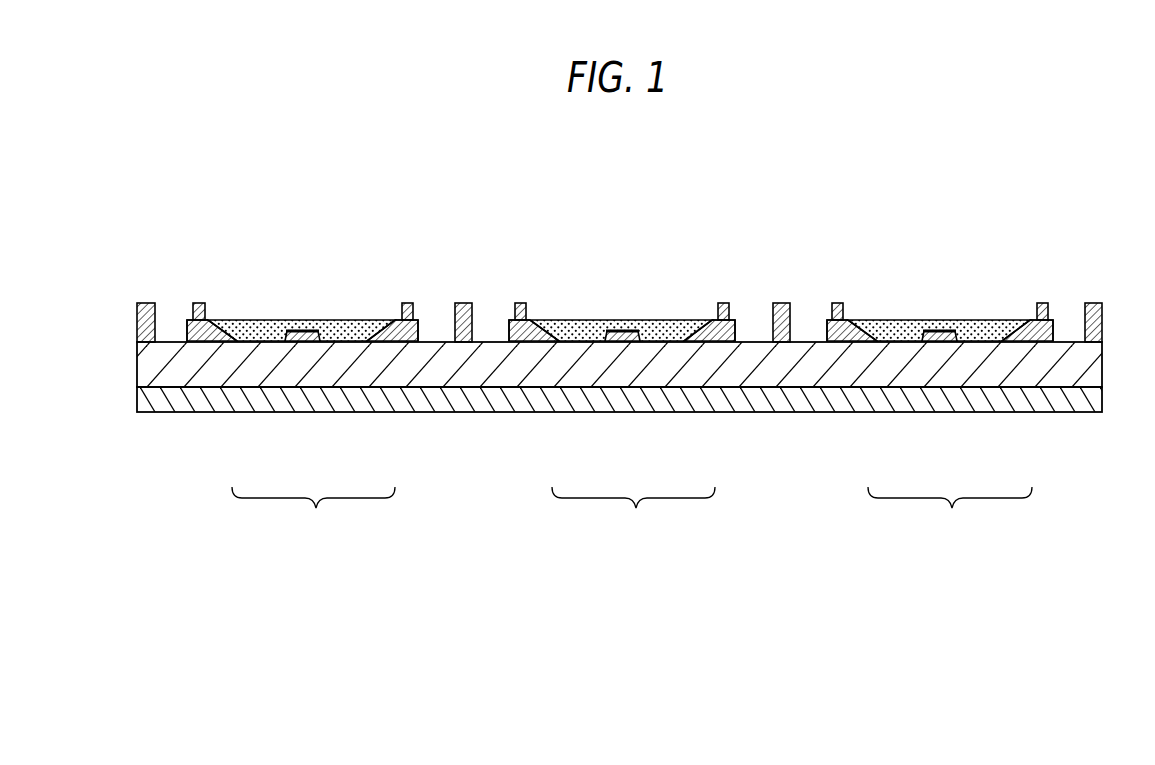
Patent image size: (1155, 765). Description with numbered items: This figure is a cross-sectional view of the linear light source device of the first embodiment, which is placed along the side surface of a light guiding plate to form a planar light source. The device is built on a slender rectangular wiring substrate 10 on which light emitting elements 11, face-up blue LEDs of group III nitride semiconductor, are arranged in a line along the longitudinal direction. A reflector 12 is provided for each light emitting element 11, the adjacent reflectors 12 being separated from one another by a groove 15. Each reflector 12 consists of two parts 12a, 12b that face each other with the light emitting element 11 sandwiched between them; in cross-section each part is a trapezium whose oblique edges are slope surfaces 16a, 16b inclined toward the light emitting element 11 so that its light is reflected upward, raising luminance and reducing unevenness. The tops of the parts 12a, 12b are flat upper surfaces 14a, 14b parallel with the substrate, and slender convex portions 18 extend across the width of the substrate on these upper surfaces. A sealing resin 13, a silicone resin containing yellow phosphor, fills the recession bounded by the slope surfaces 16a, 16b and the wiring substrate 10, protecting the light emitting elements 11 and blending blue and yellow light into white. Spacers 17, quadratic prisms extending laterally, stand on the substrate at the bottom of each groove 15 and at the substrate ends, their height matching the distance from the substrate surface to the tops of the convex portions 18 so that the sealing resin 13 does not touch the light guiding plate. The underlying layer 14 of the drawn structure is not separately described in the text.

The wiring substrate 10 is at (1056, 377).
The light emitting element 11 is at (298, 330).
The reflector 12 is at (632, 514).
The first part of reflector 12a is at (387, 323).
The second part of reflector 12b is at (203, 328).
The sealing resin 13 is at (265, 322).
The insulating layer 14 is at (1080, 405).
The upper surface 14a is at (418, 333).
The upper surface 14b is at (187, 337).
The groove 15 is at (446, 314).
The slope surface 16a is at (372, 322).
The slope surface 16b is at (237, 320).
The spacer 17 is at (145, 303).
The convex portion 18 is at (199, 303).